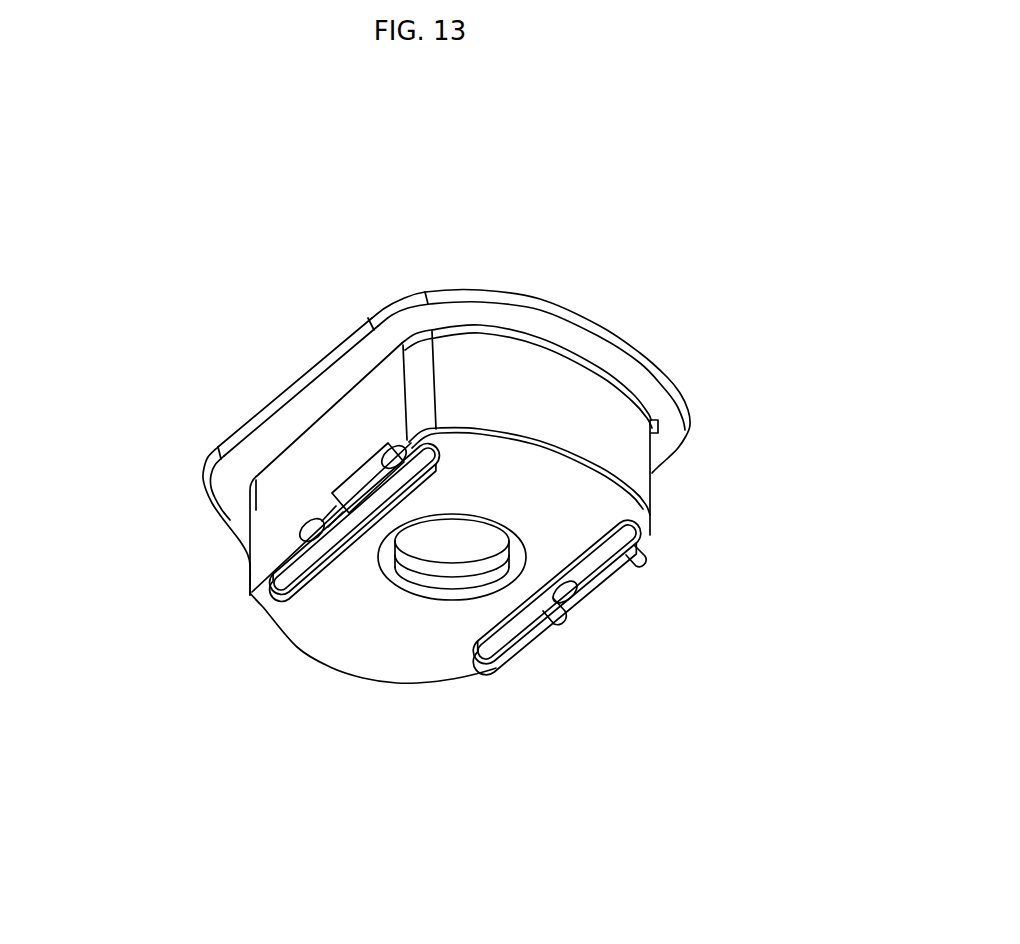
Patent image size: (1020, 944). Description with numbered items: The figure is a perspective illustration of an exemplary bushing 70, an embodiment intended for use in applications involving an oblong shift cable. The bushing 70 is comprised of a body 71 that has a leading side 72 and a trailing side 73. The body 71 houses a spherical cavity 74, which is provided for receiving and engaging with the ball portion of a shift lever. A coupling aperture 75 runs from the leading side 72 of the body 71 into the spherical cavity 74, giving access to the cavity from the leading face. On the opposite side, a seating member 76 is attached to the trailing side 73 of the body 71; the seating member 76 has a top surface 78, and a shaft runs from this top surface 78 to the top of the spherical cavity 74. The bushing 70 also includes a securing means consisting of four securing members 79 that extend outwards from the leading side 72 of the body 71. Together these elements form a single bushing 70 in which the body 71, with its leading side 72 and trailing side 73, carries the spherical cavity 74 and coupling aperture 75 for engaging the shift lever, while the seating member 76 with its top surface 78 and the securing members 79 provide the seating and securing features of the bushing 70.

The bushing 70 is at (188, 350).
The body 71 is at (628, 452).
The leading side 72 is at (372, 636).
The trailing side 73 is at (463, 330).
The spherical cavity 74 is at (443, 535).
The coupling aperture 75 is at (495, 572).
The seating member 76 is at (647, 354).
The top surface 78 is at (334, 349).
The securing members 79 is at (273, 562).